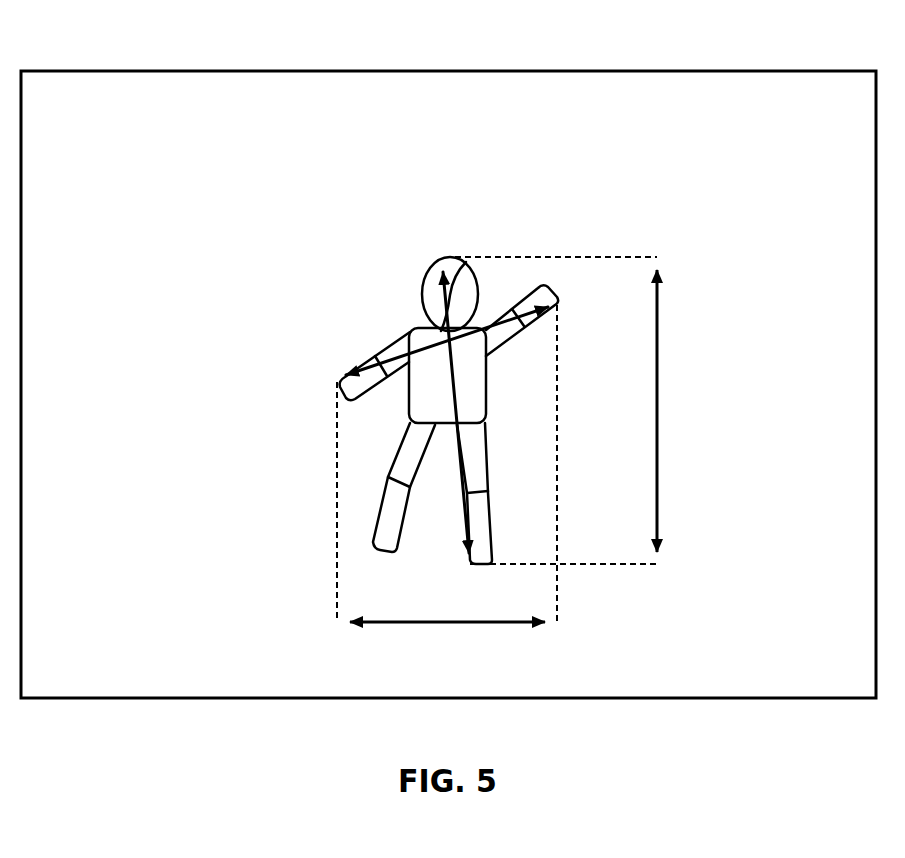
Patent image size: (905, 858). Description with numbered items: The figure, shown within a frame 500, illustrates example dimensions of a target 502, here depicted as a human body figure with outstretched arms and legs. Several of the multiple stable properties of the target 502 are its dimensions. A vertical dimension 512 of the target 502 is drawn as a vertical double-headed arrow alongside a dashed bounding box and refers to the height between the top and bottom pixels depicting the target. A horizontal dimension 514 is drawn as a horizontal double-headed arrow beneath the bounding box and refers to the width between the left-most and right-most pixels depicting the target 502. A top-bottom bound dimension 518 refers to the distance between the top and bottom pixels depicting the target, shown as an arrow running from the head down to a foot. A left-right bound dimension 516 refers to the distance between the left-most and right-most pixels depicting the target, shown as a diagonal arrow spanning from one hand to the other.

The image frame / scene 500 is at (448, 36).
The target 502 is at (408, 383).
The vertical dimension 512 is at (582, 410).
The horizontal dimension 514 is at (447, 482).
The left-right bound dimension 516 is at (346, 394).
The top-bottom bound dimension 518 is at (458, 258).